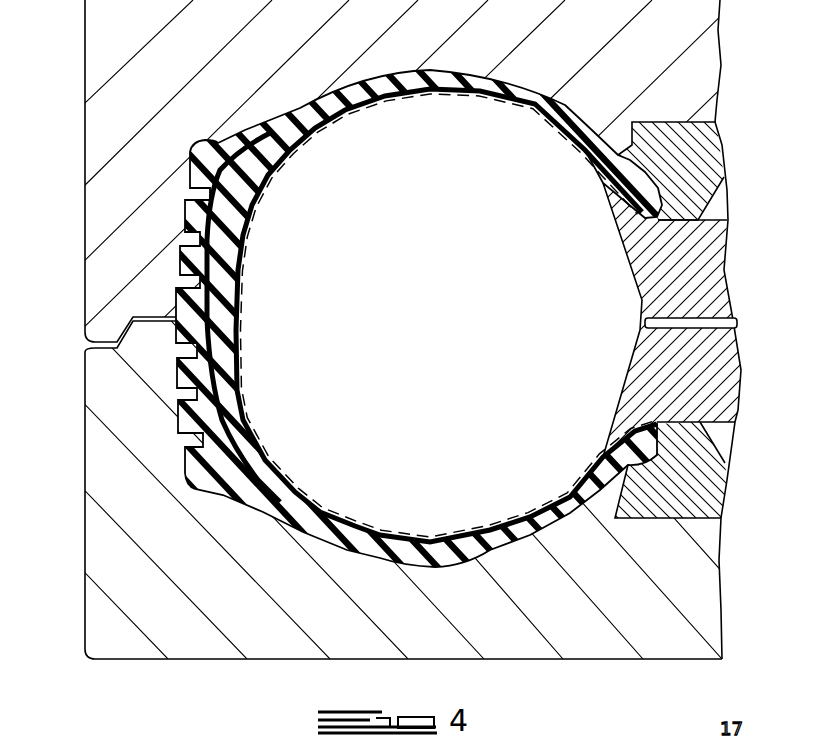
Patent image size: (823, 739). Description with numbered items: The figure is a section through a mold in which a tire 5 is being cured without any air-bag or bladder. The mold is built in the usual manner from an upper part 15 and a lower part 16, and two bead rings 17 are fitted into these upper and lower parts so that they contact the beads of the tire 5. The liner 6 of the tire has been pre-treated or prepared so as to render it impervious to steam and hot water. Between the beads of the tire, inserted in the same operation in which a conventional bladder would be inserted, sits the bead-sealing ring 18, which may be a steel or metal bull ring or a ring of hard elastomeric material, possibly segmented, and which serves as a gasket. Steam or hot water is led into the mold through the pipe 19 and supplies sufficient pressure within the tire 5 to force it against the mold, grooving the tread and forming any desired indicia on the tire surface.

The tire 5 is at (197, 160).
The liner 6 is at (488, 107).
The upper part 15 is at (100, 23).
The lower part 16 is at (98, 493).
The bead ring 17 is at (713, 163).
The bead-sealing ring 18 is at (635, 392).
The pipe 19 is at (730, 313).